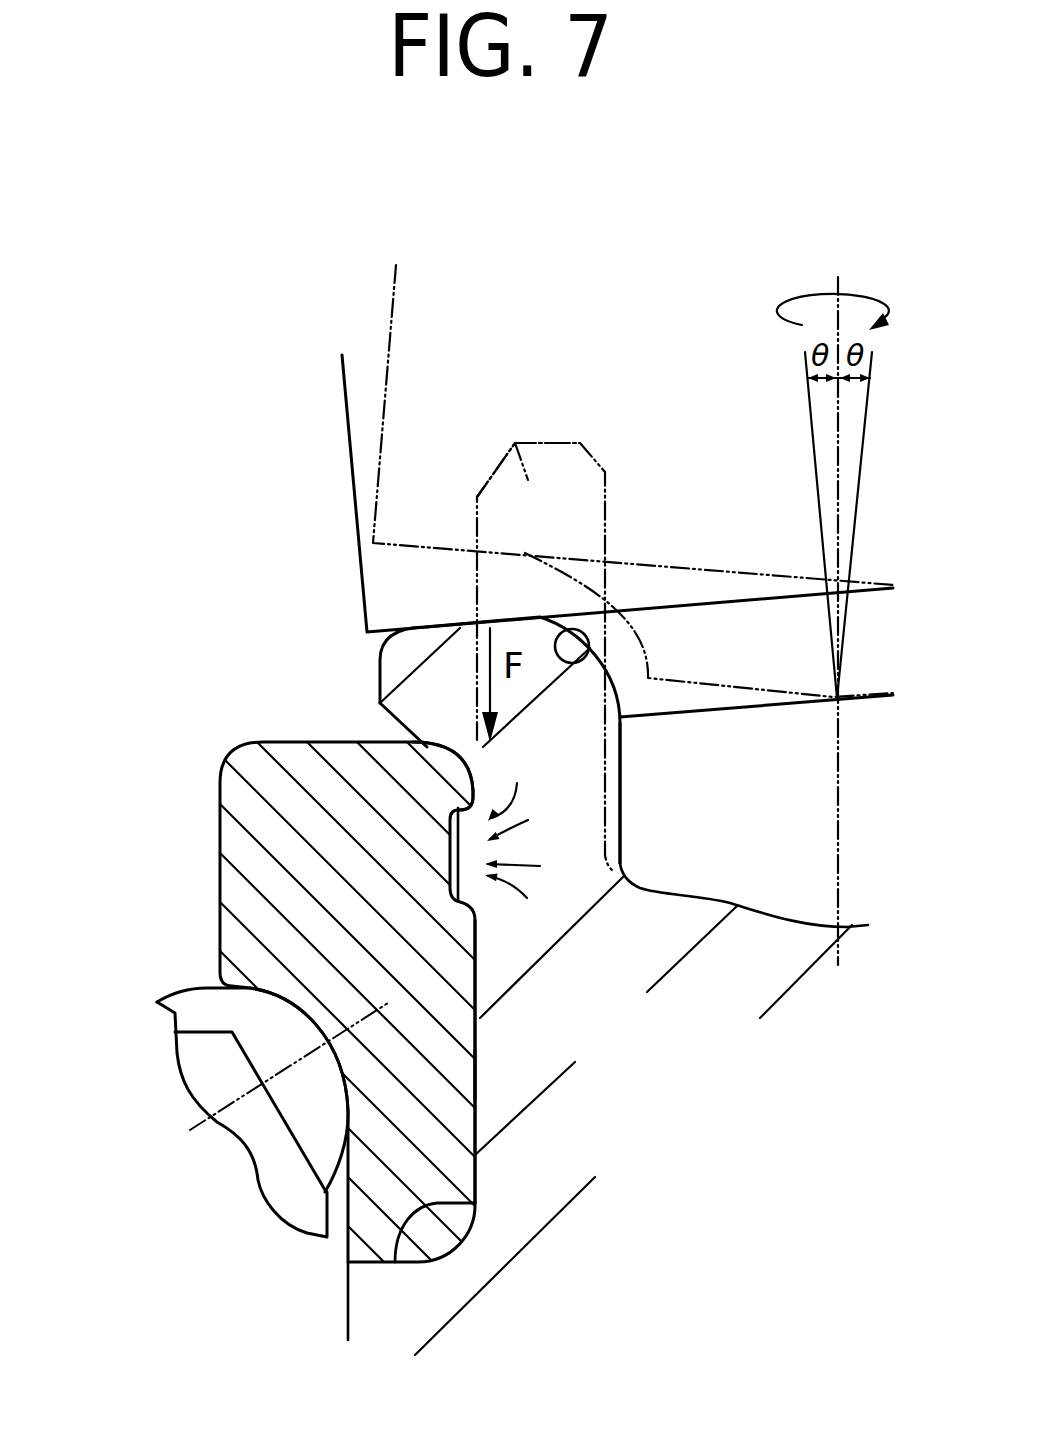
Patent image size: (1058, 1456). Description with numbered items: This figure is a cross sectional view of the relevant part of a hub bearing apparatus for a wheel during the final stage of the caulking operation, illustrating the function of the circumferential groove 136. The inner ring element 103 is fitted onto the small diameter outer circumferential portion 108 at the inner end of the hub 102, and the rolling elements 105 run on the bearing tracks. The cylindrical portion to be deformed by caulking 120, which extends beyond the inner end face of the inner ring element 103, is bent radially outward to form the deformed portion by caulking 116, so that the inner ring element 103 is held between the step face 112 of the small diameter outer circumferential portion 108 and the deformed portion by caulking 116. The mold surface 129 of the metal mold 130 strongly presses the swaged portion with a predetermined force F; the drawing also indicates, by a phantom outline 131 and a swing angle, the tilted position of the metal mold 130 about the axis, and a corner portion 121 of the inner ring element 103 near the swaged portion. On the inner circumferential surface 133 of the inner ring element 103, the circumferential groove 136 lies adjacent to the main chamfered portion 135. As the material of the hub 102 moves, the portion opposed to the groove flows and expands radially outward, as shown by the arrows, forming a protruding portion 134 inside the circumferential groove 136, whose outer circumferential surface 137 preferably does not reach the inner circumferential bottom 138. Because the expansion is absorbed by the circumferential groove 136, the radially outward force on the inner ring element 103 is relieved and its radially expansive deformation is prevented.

The hub 102 is at (495, 1247).
The inner ring element 103 is at (240, 852).
The rolling elements 105 is at (198, 1015).
The small diameter outer circumferential portion 108 is at (473, 975).
The step face 112 is at (475, 1203).
The deformed portion by caulking 116 is at (460, 680).
The cylindrical portion to be deformed by caulking 120 is at (515, 443).
The corner portion of die 121 is at (338, 742).
The mold surface 129 is at (560, 628).
The metal mold 130 is at (383, 595).
The tilted tool position 131 is at (477, 523).
The inner circumferential surface 133 is at (477, 1125).
The protruding portion 134 is at (623, 875).
The main chamfered portion 135 is at (487, 747).
The circumferential groove 136 is at (485, 900).
The outer circumferential surface 137 is at (457, 837).
The inner circumferential bottom 138 is at (475, 857).